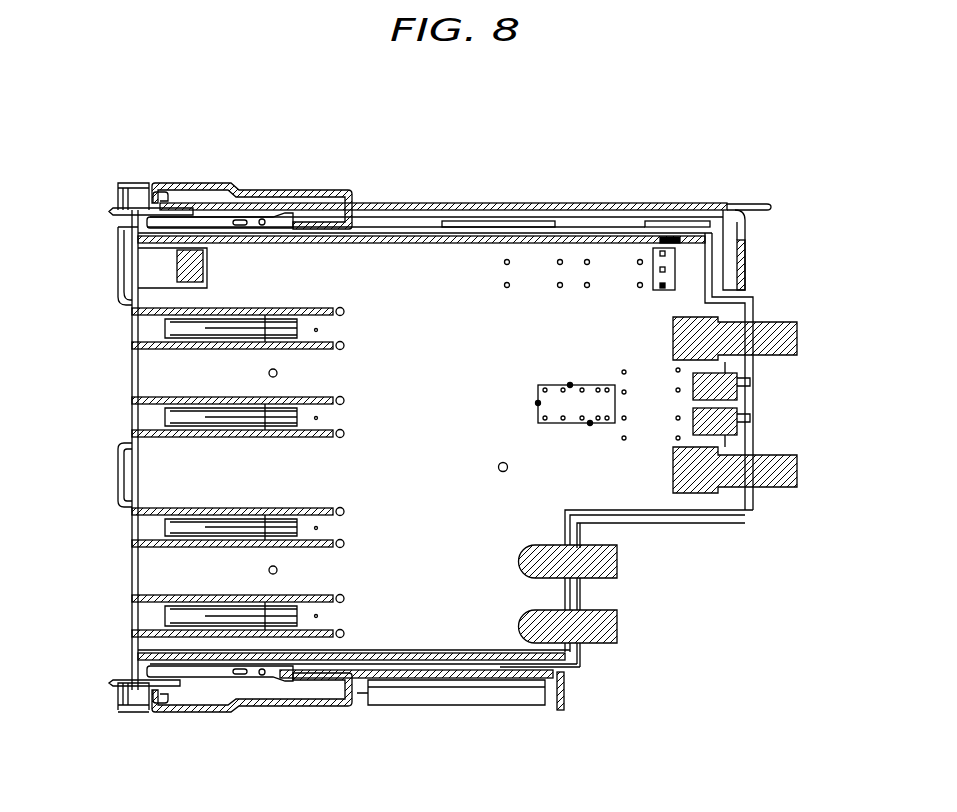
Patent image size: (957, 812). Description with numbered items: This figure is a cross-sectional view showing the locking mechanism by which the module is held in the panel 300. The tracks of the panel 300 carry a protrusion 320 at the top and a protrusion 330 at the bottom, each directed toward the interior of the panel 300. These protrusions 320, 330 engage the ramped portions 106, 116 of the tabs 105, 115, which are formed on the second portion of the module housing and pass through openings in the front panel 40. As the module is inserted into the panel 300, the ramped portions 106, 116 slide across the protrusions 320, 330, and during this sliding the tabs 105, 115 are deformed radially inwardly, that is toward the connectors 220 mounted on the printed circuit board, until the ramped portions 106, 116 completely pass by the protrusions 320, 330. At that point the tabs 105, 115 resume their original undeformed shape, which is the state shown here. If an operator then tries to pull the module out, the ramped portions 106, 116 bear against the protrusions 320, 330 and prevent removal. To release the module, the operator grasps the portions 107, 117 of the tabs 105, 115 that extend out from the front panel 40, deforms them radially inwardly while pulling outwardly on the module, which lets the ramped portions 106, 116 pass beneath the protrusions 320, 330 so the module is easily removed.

The front panel 40 is at (130, 383).
The tab 105 is at (273, 218).
The ramped portion 106 is at (163, 193).
The portion of tab 107 is at (118, 212).
The tab 115 is at (270, 680).
The ramped portion 116 is at (165, 690).
The portion of tab 117 is at (115, 690).
The connectors 220 is at (787, 463).
The panel 300 is at (461, 203).
The protrusion 320 is at (198, 183).
The protrusion 330 is at (188, 713).